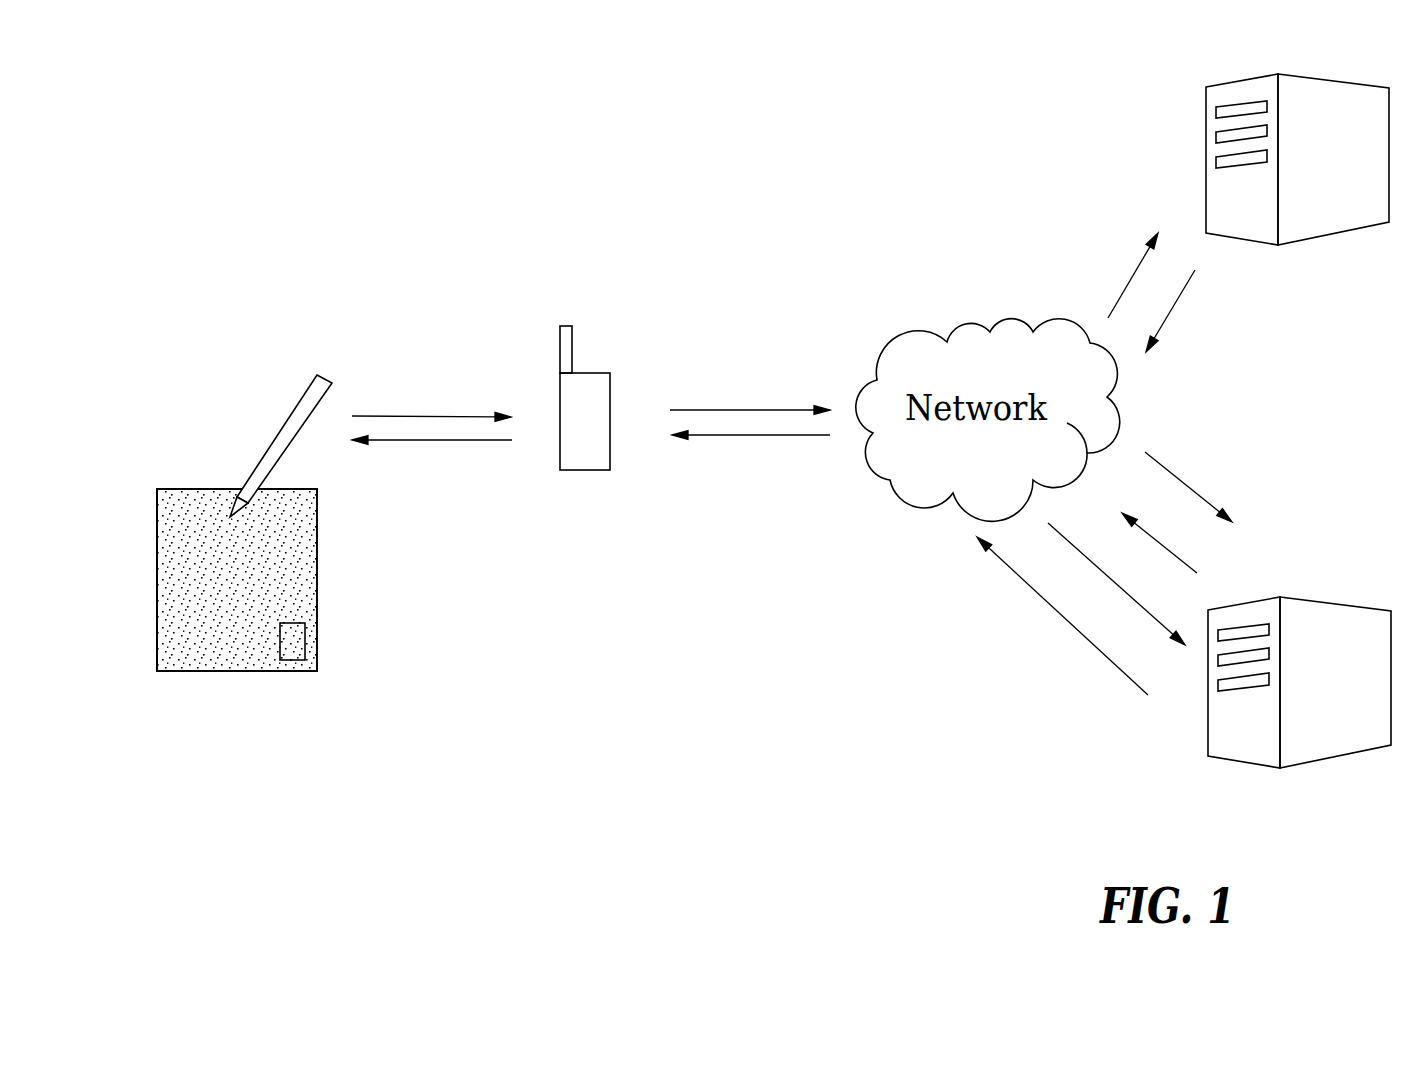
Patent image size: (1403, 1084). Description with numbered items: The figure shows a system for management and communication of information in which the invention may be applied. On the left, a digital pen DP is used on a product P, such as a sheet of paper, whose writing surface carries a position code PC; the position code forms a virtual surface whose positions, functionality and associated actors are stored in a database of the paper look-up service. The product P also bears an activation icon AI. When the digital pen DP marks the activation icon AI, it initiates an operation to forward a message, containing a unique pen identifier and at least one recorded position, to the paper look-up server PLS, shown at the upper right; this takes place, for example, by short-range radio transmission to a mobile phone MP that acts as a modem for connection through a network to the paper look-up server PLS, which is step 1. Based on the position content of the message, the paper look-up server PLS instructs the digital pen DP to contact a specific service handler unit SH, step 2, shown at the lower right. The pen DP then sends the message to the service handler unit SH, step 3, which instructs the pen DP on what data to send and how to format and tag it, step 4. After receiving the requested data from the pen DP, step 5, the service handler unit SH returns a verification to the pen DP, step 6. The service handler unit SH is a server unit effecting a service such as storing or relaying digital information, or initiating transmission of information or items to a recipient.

The digital pen DP is at (303, 410).
The product P is at (183, 490).
The position code PC is at (183, 650).
The activation icon AI is at (305, 633).
The mobile phone MP is at (597, 387).
The paper look-up server PLS is at (1317, 219).
The service handler unit SH is at (1328, 743).
The step of forwarding a message to the paper look-up server 1 is at (1130, 275).
The step of instructing the pen to contact a service handler unit 2 is at (1166, 311).
The step of sending the message to the service handler unit 3 is at (1188, 481).
The step of instructing the pen on data to send 4 is at (1159, 536).
The step of sending the requested data 5 is at (1116, 584).
The step of returning a verification 6 is at (1062, 616).